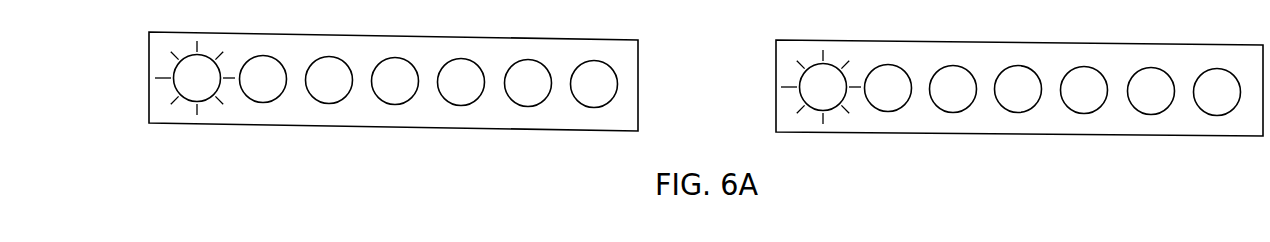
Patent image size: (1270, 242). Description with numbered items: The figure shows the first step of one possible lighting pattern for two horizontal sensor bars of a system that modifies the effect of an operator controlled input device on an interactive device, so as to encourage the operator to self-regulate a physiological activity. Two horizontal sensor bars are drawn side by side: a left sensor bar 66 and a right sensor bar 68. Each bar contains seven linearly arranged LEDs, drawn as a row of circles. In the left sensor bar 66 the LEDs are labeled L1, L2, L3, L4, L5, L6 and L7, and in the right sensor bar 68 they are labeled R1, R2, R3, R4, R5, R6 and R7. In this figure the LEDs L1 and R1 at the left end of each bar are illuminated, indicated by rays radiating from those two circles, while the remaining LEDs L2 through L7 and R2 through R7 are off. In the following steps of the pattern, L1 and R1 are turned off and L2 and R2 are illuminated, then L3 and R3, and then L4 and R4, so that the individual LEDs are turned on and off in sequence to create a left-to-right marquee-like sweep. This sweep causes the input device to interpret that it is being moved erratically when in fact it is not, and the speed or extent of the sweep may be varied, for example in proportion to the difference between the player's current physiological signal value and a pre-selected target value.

The left sensor bar 66 is at (437, 74).
The right sensor bar 68 is at (967, 88).
The LED L1 is at (195, 78).
The LED L2 is at (263, 79).
The LED L3 is at (329, 80).
The LED L4 is at (395, 81).
The LED L5 is at (461, 82).
The LED L6 is at (528, 83).
The LED L7 is at (594, 84).
The LED R1 is at (821, 87).
The LED R2 is at (888, 88).
The LED R3 is at (953, 89).
The LED R4 is at (1018, 89).
The LED R5 is at (1084, 90).
The LED R6 is at (1151, 91).
The LED R7 is at (1217, 92).